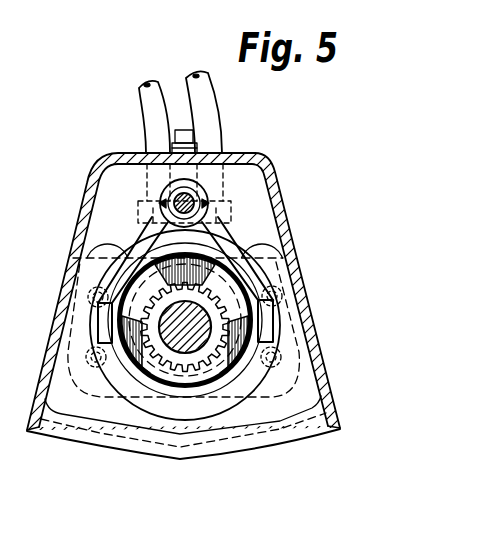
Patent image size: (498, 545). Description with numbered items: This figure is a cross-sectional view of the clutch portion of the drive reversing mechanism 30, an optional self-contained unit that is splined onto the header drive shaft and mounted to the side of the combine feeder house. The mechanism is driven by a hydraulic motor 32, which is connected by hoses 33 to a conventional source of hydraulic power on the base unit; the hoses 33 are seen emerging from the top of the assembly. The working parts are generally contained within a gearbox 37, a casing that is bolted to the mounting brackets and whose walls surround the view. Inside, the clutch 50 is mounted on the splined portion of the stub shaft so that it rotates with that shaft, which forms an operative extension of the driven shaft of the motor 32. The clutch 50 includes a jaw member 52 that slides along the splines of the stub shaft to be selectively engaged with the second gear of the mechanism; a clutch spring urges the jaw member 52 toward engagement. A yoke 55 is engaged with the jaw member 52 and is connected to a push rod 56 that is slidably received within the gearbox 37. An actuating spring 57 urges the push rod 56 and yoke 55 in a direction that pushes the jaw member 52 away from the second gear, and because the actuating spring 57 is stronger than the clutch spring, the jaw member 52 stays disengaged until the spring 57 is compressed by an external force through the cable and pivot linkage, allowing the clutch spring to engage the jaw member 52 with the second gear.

The drive reversing mechanism 30 is at (290, 144).
The hydraulic motor 32 is at (73, 258).
The hoses 33 is at (213, 111).
The gearbox 37 is at (285, 226).
The clutch 50 is at (186, 409).
The jaw member 52 is at (238, 364).
The yoke 55 is at (243, 252).
The push rod 56 is at (161, 203).
The actuating spring 57 is at (206, 190).